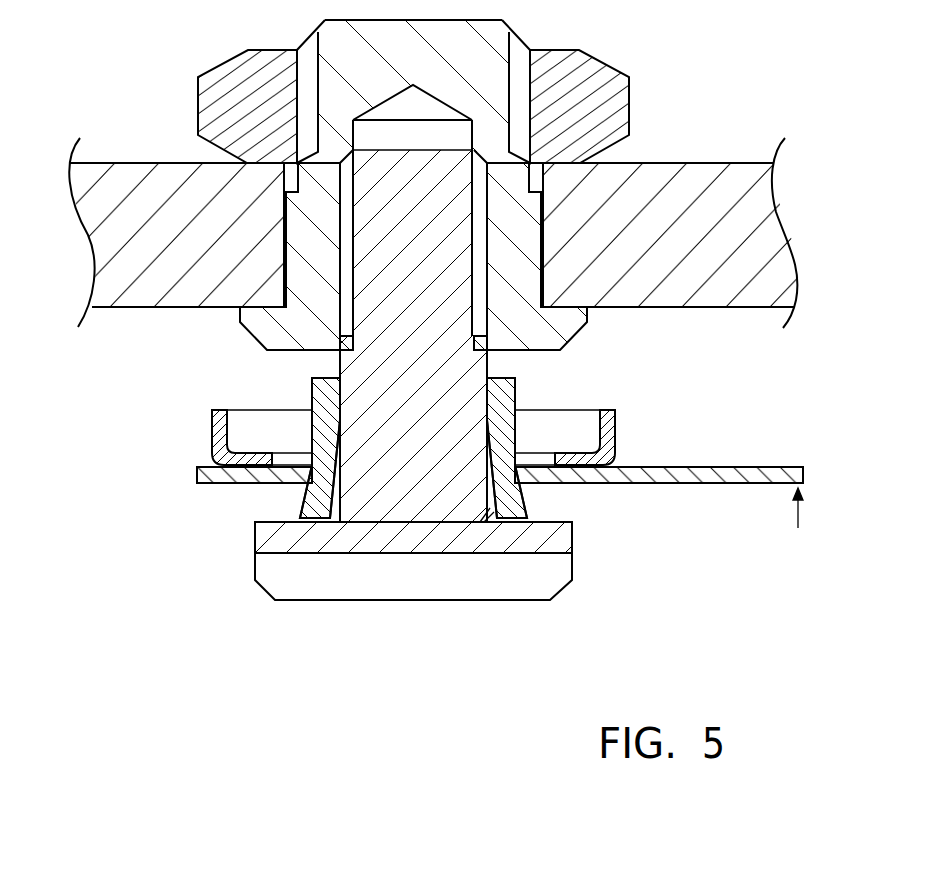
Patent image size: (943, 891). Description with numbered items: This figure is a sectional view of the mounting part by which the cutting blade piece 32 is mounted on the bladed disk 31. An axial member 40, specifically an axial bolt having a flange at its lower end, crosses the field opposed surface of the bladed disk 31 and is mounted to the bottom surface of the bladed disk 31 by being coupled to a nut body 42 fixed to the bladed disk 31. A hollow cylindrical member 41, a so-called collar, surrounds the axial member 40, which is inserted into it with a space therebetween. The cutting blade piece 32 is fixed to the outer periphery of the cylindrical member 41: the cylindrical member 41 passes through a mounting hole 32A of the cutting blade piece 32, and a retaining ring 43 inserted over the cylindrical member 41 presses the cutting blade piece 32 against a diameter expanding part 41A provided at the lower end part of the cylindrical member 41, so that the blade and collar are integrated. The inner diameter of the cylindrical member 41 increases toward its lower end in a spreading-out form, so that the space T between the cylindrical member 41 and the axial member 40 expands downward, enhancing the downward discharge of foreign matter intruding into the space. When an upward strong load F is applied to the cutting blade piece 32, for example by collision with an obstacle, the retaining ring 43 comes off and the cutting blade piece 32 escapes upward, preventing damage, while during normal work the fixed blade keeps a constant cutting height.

The bladed disk 31 is at (710, 163).
The cutting blade piece 32 is at (758, 467).
The mounting hole 32A is at (318, 500).
The axial member 40 is at (340, 362).
The cylindrical member 41 is at (515, 393).
The diameter expanding part 41A is at (302, 500).
The nut body 42 is at (253, 337).
The retaining ring 43 is at (617, 437).
The space T is at (492, 510).
The upward strong load F is at (798, 526).